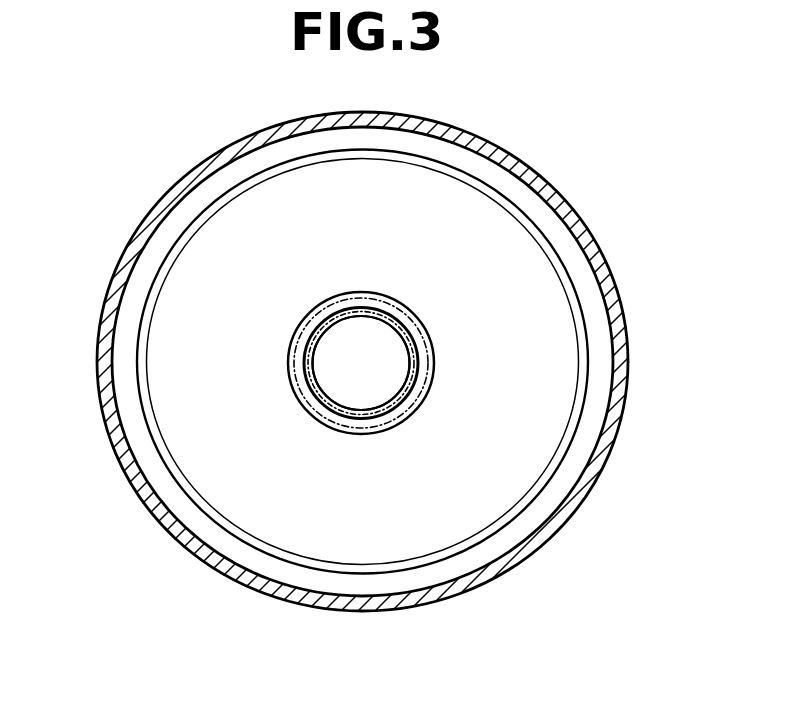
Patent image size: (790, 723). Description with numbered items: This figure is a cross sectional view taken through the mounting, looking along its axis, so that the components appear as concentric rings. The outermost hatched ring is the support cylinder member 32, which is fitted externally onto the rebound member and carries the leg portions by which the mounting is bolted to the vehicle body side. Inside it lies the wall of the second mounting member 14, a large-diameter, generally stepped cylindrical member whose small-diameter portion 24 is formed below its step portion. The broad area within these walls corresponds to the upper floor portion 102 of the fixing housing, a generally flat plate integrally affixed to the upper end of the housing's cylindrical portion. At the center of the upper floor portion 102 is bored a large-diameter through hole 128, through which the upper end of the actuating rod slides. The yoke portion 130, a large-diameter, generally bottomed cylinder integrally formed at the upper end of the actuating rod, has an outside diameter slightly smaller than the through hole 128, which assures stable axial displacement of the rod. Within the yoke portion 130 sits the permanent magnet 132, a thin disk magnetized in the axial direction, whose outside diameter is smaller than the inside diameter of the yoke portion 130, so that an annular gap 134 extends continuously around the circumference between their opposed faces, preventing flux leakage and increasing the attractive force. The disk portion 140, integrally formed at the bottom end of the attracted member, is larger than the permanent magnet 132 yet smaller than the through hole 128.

The support cylinder member 32 is at (101, 378).
The second mounting member 14 is at (367, 377).
The small-diameter portion 24 is at (467, 542).
The upper floor portion 102 is at (415, 245).
The through hole 128 is at (418, 395).
The yoke portion 130 is at (413, 344).
The permanent magnet 132 is at (310, 390).
The annular gap 134 is at (326, 405).
The disk portion 140 is at (352, 343).